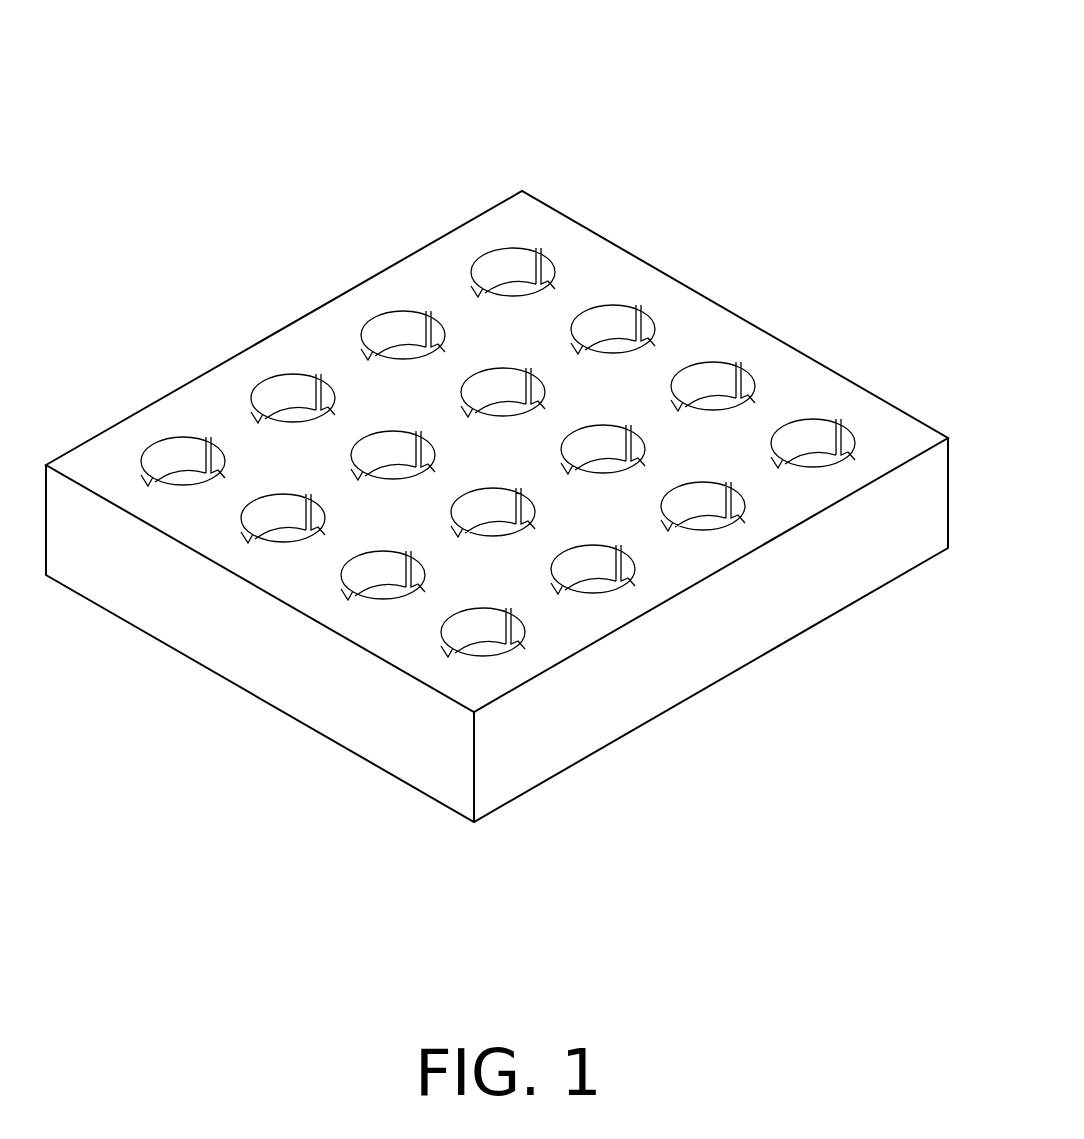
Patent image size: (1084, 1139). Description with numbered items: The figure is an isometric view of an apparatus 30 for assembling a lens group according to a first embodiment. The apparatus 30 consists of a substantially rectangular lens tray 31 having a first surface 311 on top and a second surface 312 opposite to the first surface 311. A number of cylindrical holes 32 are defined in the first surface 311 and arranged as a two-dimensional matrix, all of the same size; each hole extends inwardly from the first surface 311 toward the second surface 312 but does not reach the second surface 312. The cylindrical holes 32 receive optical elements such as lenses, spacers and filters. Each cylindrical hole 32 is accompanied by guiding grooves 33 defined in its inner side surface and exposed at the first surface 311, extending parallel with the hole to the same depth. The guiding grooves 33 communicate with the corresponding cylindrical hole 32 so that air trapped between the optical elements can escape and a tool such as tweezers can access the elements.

The apparatus for assembling a lens group 30 is at (509, 38).
The lens tray 31 is at (783, 591).
The first surface 311 is at (463, 685).
The second surface 312 is at (608, 748).
The cylindrical holes 32 is at (600, 322).
The guiding grooves 33 is at (642, 312).